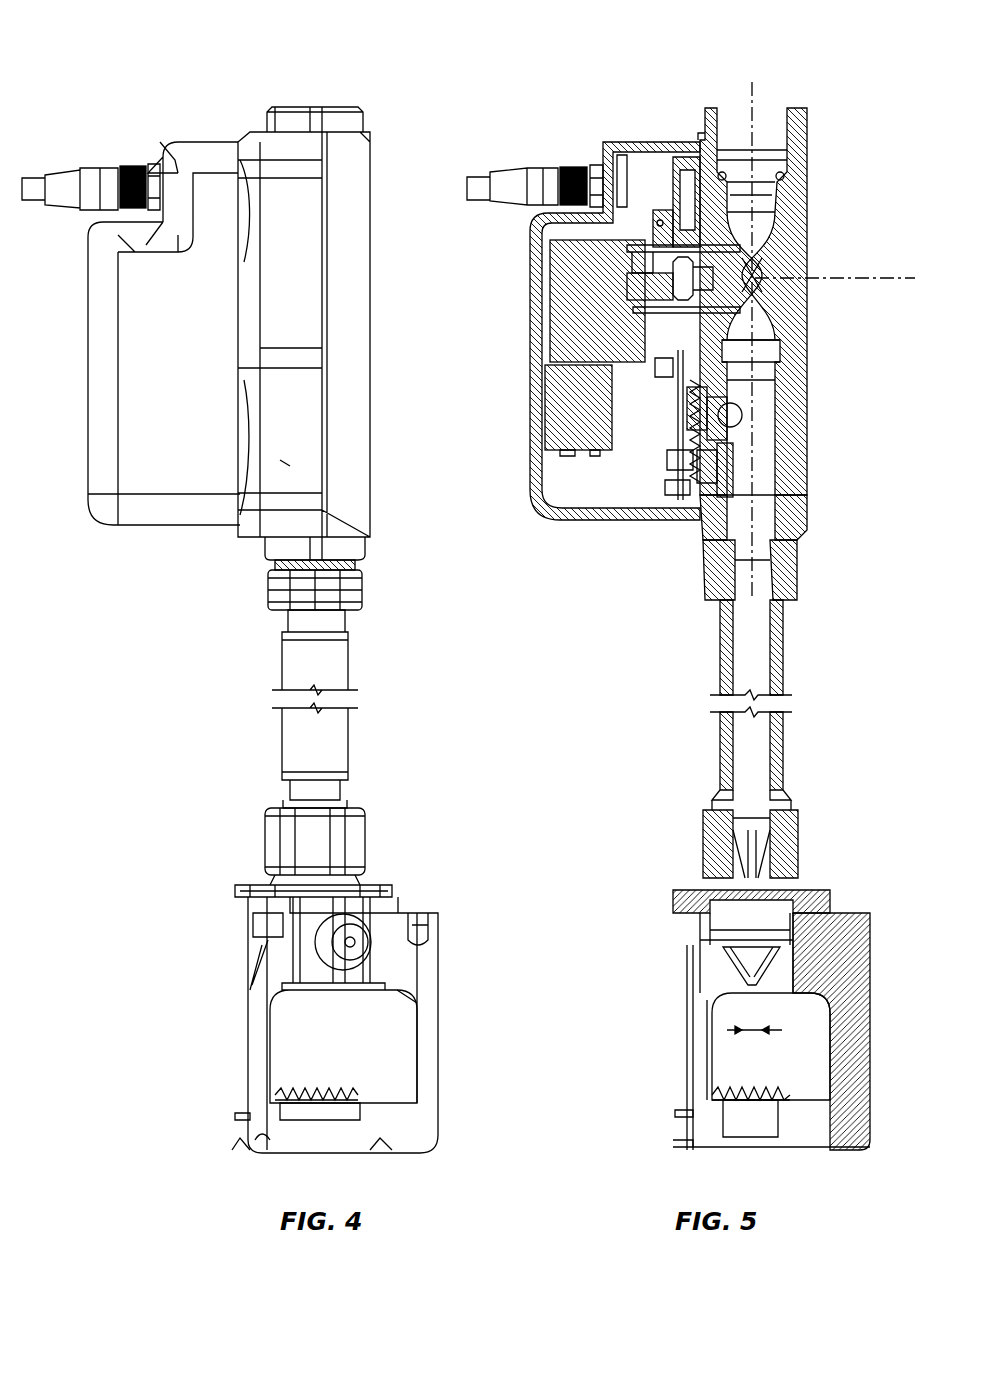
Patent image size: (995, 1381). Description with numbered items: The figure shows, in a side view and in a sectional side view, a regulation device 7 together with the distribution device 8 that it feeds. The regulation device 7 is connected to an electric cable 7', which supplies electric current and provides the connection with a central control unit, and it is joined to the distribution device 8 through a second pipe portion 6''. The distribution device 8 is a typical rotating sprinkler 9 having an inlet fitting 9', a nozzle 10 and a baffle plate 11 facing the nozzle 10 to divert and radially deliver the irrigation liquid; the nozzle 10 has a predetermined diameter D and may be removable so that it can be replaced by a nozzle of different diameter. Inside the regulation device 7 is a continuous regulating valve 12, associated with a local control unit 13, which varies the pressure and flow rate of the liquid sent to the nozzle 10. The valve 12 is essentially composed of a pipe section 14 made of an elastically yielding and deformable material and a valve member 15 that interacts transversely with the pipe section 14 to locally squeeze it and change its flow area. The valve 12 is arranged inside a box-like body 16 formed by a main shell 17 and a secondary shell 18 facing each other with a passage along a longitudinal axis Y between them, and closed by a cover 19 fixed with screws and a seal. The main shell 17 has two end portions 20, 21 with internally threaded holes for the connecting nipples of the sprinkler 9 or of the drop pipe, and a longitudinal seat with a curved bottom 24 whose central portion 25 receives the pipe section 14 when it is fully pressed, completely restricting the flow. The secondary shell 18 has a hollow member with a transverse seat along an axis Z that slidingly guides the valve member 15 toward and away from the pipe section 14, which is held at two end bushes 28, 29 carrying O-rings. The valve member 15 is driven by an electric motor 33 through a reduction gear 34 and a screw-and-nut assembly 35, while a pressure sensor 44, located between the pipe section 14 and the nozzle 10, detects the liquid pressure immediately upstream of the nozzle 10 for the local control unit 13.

In FIG. 4, the regulation device 7 is at (163, 147).
In FIG. 4, the electric cable 7' is at (91, 148).
In FIG. 5, the electric cable 7' is at (535, 145).
In FIG. 4, the main shell 17 is at (347, 172).
In FIG. 4, the cover 19 is at (196, 372).
In FIG. 5, the cover 19 is at (537, 502).
In FIG. 4, the box-like body 16 is at (287, 462).
In FIG. 4, the second pipe portion 6'' is at (243, 709).
In FIG. 5, the second pipe portion 6'' is at (709, 739).
In FIG. 4, the inlet fitting 9' is at (358, 815).
In FIG. 4, the distribution device 8 is at (236, 920).
In FIG. 4, the rotating sprinkler 9 is at (367, 1025).
In FIG. 5, the screw-and-nut assembly 35 is at (668, 277).
In FIG. 5, the secondary shell 18 is at (703, 230).
In FIG. 5, the end portion 21 is at (789, 127).
In FIG. 5, the end bush 29 is at (772, 185).
In FIG. 5, the curved bottom 24 is at (779, 212).
In FIG. 5, the central portion 25 is at (762, 262).
In FIG. 5, the pipe section 14 is at (778, 300).
In FIG. 5, the continuous regulating valve 12 is at (783, 320).
In FIG. 5, the valve member 15 is at (783, 355).
In FIG. 5, the end bush 28 is at (776, 392).
In FIG. 5, the pressure sensor 44 is at (742, 420).
In FIG. 5, the end portion 20 is at (800, 548).
In FIG. 5, the local control unit 13 is at (653, 424).
In FIG. 5, the reduction gear 34 is at (565, 307).
In FIG. 5, the electric motor 33 is at (570, 415).
In FIG. 5, the nozzle 10 is at (702, 942).
In FIG. 5, the baffle plate 11 is at (735, 1090).
In FIG. 5, the longitudinal axis Y is at (752, 82).
In FIG. 5, the transverse axis Z is at (849, 270).
In FIG. 5, the nozzle diameter D is at (750, 1033).